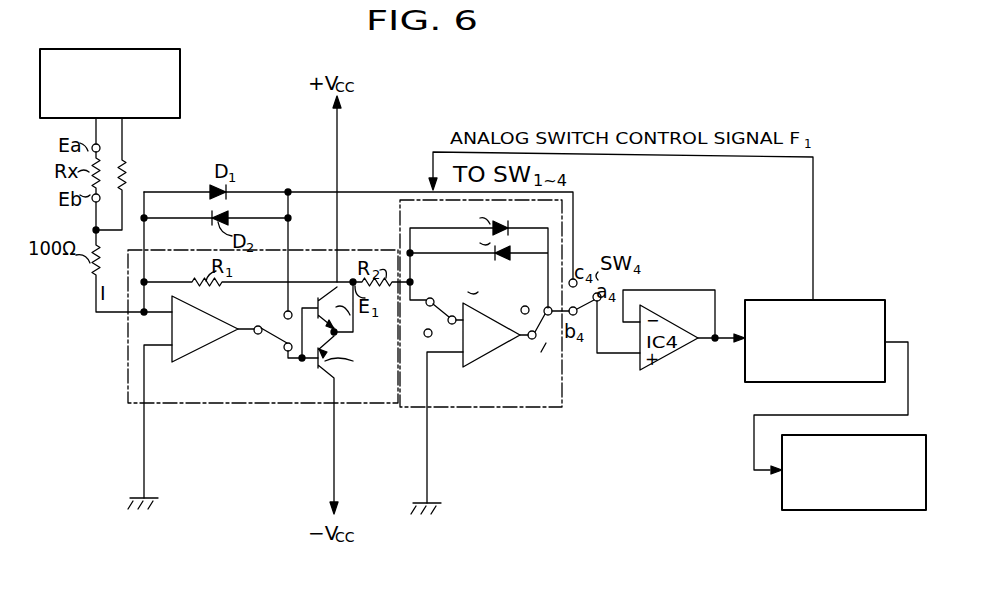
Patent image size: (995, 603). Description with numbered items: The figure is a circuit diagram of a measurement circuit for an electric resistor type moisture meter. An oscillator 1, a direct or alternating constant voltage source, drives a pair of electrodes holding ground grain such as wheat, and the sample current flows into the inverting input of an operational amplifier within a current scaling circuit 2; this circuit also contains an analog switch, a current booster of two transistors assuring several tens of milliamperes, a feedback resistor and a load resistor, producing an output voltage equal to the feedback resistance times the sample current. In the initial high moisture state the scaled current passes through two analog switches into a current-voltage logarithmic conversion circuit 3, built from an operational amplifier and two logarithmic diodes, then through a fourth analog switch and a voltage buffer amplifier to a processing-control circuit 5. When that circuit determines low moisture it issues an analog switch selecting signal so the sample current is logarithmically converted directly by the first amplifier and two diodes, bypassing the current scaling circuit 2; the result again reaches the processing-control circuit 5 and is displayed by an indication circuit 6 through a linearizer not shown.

The oscillator 1 is at (180, 92).
The current scaling circuit 2 is at (248, 403).
The current-voltage logarithmic conversion circuit 3 is at (487, 407).
The processing-control circuit 5 is at (887, 329).
The indication circuit 6 is at (850, 510).